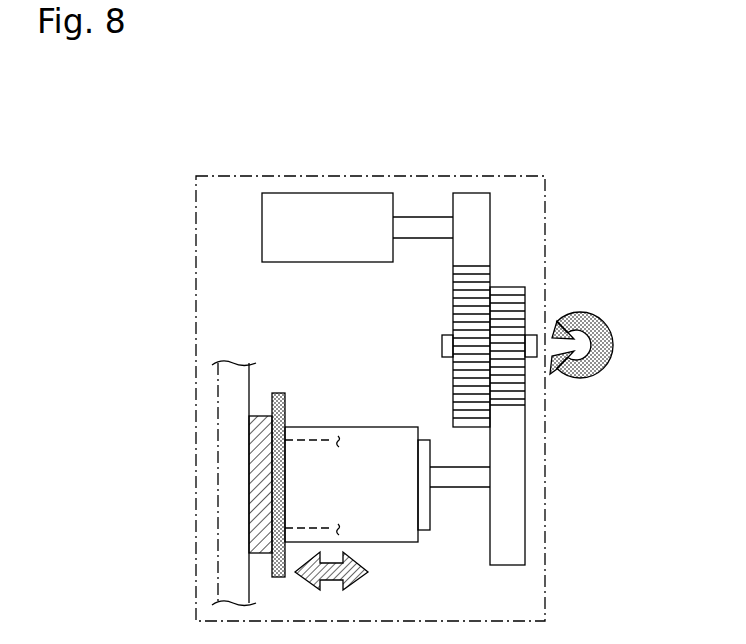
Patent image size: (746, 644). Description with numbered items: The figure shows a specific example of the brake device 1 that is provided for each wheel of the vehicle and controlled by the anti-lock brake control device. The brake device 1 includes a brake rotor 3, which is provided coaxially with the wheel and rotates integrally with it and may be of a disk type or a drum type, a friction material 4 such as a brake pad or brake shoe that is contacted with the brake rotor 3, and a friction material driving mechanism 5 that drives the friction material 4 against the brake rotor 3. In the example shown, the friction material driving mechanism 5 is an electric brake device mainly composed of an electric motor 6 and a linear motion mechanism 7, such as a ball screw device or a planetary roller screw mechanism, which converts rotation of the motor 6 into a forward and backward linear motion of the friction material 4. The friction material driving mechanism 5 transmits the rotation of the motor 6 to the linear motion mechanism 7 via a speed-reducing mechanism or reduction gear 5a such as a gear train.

The brake device 1 is at (196, 240).
The brake rotor 3 is at (228, 385).
The friction material 4 is at (256, 550).
The friction material driving mechanism 5 is at (308, 112).
The reduction gear 5a is at (532, 390).
The electric motor 6 is at (285, 207).
The linear motion mechanism 7 is at (315, 432).